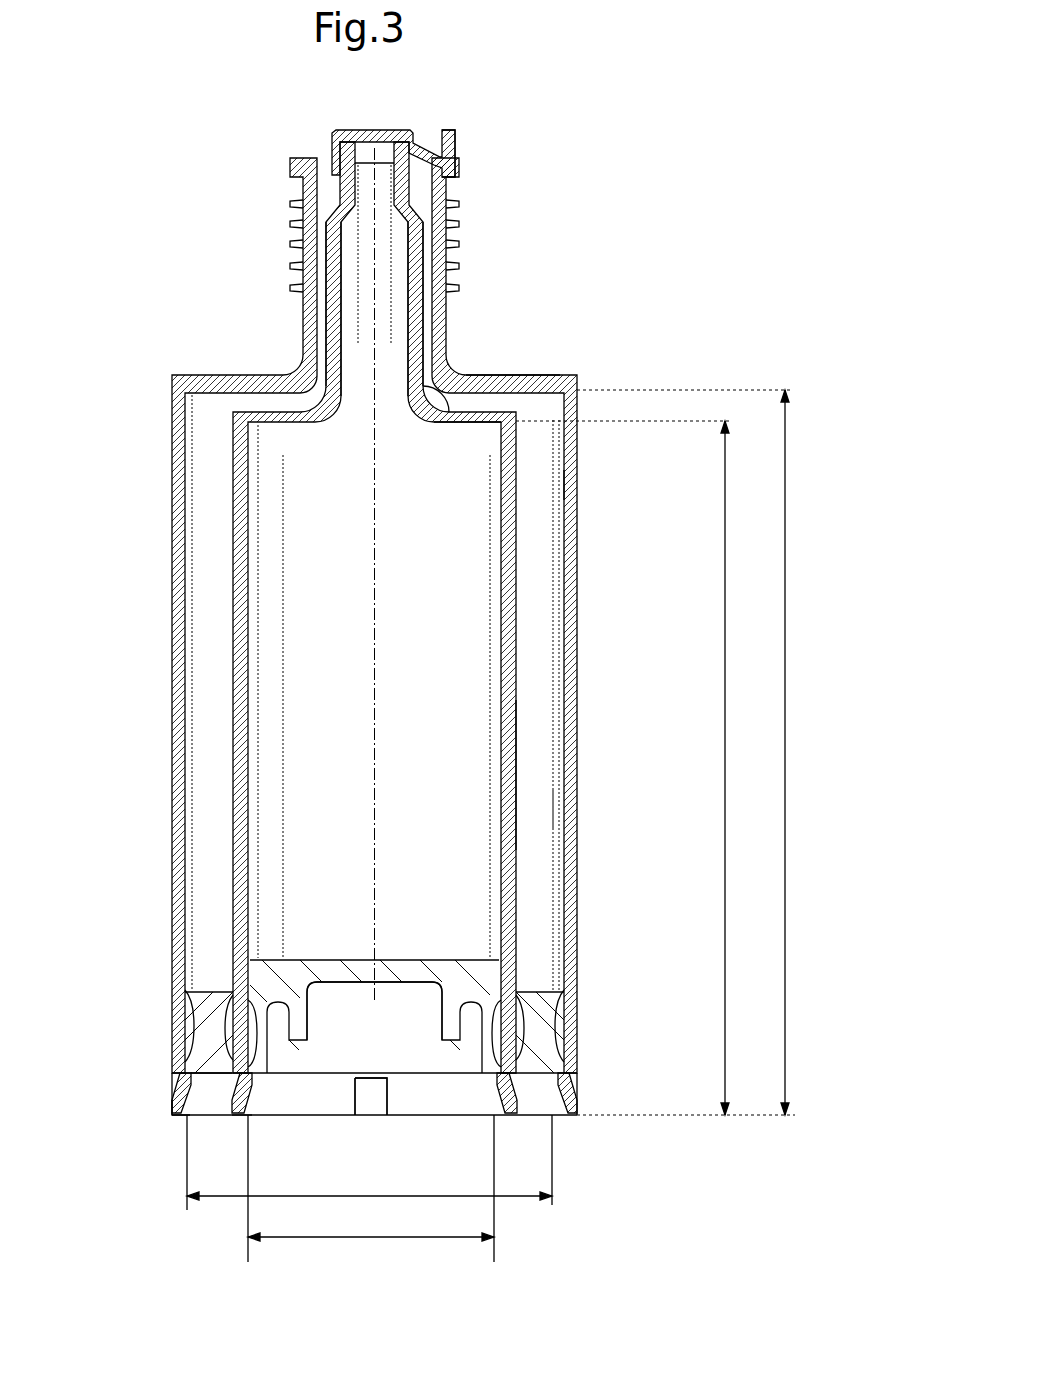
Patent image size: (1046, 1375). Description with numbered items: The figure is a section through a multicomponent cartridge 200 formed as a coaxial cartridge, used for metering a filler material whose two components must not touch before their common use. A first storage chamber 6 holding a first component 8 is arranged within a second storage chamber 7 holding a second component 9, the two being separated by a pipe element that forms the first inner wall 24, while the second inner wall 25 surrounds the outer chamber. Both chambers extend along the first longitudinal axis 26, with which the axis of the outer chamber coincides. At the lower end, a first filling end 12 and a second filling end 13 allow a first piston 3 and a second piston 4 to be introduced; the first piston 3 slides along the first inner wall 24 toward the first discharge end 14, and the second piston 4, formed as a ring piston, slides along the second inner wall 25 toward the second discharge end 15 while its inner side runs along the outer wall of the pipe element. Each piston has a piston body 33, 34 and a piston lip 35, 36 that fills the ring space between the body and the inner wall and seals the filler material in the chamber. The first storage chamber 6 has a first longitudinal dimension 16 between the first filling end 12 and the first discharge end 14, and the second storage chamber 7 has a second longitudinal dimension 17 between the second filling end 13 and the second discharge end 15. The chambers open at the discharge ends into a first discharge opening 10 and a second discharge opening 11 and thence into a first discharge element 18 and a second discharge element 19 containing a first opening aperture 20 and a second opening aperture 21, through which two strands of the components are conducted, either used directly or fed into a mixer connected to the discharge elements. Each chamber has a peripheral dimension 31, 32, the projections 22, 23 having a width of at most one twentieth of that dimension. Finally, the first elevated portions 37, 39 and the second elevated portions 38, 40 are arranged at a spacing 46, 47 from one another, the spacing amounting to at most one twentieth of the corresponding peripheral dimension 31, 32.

The first piston 3 is at (422, 980).
The second piston 4 is at (526, 995).
The first storage chamber 6 is at (488, 440).
The second storage chamber 7 is at (548, 675).
The first component 8 is at (317, 539).
The second component 9 is at (547, 586).
The first discharge opening 10 is at (409, 400).
The second discharge opening 11 is at (452, 395).
The first filling end 12 is at (297, 1117).
The second filling end 13 is at (205, 1118).
The first discharge end 14 is at (270, 400).
The second discharge end 15 is at (553, 374).
The first longitudinal dimension 16 is at (725, 750).
The second longitudinal dimension 17 is at (785, 730).
The first discharge element 18 is at (418, 310).
The second discharge element 19 is at (440, 343).
The first opening aperture 20 is at (372, 150).
The second opening aperture 21 is at (410, 170).
The projection 22 is at (237, 1124).
The projection 23 is at (163, 1120).
The first inner wall 24 is at (504, 773).
The second inner wall 25 is at (558, 811).
The first longitudinal axis 26 is at (377, 655).
The peripheral dimension 31 is at (440, 1118).
The peripheral dimension 32 is at (371, 1096).
The piston body 33 is at (345, 975).
The piston body 34 is at (207, 990).
The piston lip 35 is at (247, 962).
The piston lip 36 is at (187, 993).
The first elevated portion 37 is at (253, 1117).
The second elevated portion 38 is at (498, 1117).
The first elevated portion 39 is at (176, 1085).
The second elevated portion 40 is at (573, 1103).
The spacing 46 is at (385, 1240).
The spacing 47 is at (482, 1203).
The multicomponent cartridge 200 is at (600, 483).